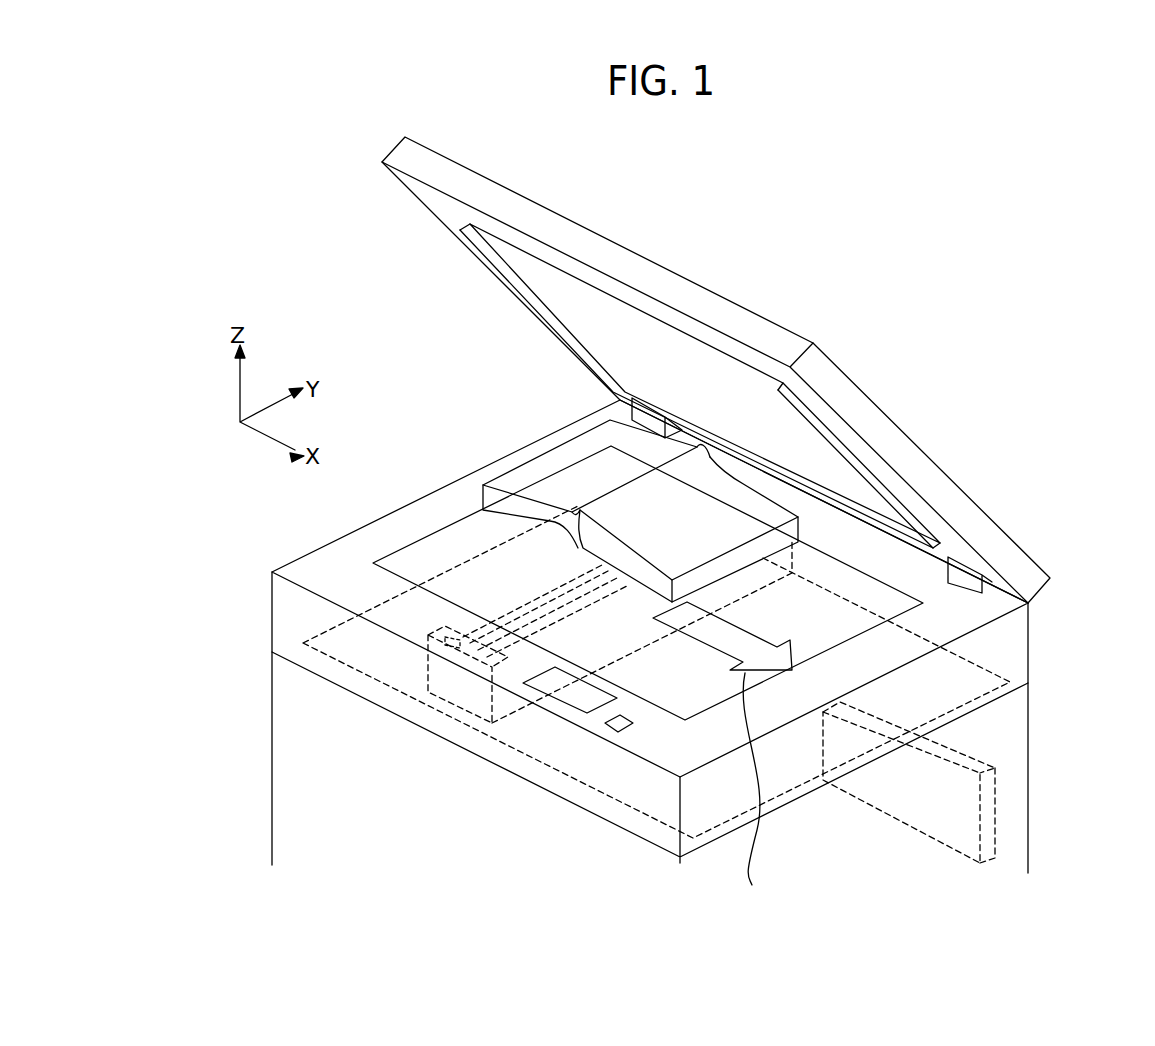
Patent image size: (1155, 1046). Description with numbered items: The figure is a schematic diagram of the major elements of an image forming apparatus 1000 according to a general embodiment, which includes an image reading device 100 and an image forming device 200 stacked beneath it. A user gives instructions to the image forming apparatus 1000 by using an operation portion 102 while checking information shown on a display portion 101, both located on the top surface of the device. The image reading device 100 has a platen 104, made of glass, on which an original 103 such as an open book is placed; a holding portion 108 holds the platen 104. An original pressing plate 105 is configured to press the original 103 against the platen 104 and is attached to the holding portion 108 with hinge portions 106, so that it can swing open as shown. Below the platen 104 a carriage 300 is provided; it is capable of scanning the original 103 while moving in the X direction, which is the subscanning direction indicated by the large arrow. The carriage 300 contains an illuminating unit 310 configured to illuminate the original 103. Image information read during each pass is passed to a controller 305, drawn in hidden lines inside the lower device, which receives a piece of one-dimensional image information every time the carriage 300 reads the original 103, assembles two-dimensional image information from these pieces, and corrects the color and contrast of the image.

The image forming apparatus 1000 is at (718, 206).
The image reading device 100 is at (297, 623).
The image forming device 200 is at (297, 740).
The original pressing plate 105 is at (893, 437).
The hinge portions 106 is at (632, 406).
The holding portion 108 is at (347, 550).
The platen 104 is at (442, 548).
The original 103 is at (528, 483).
The display portion 101 is at (594, 697).
The operation portion 102 is at (632, 718).
The carriage 300 is at (470, 697).
The illuminating unit 310 is at (450, 641).
The controller 305 is at (996, 806).